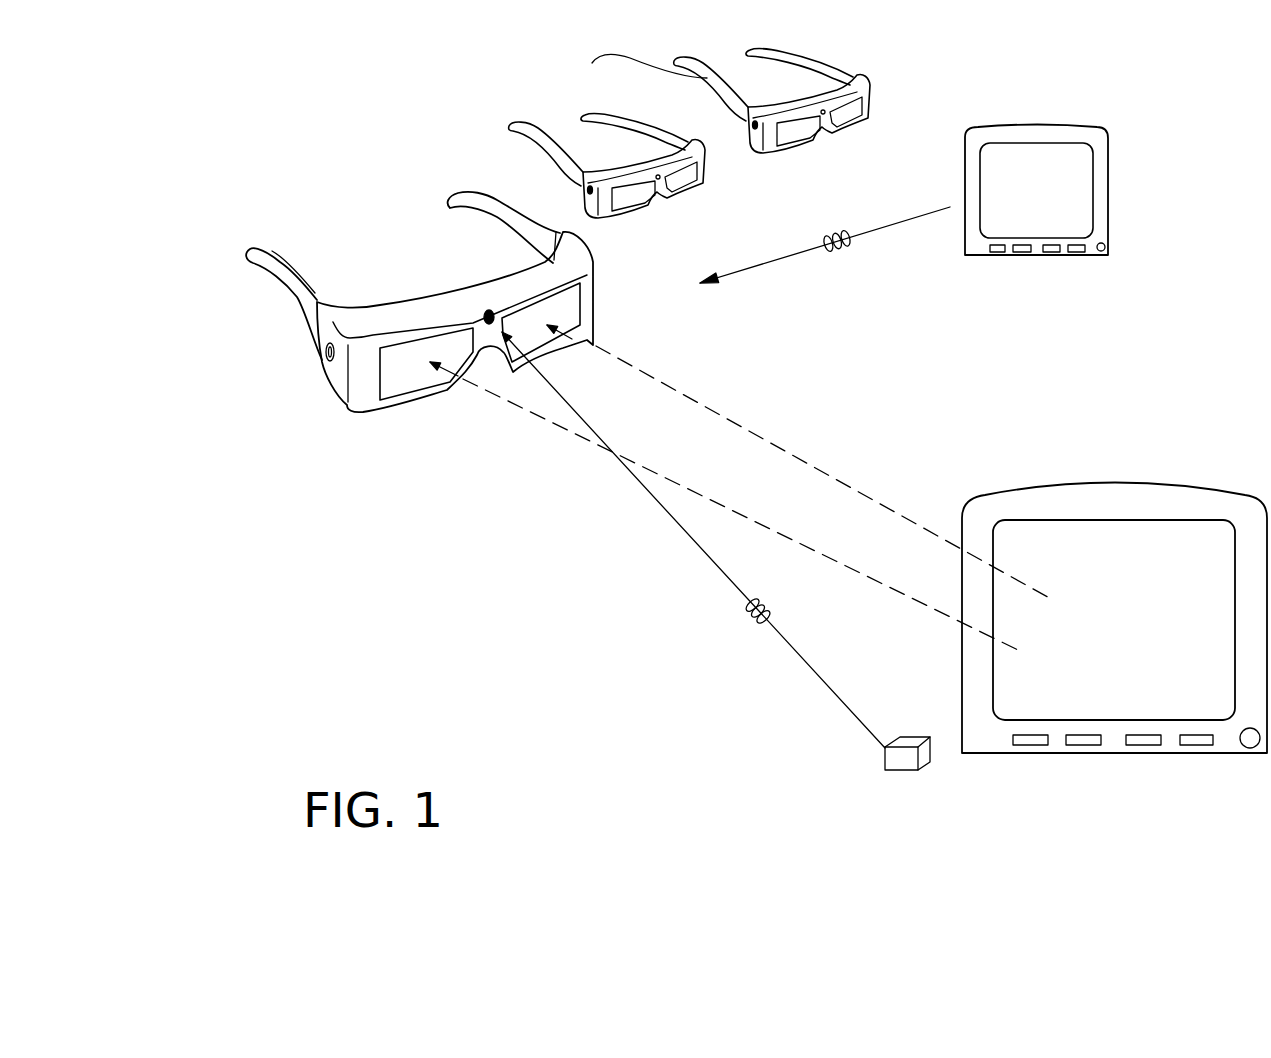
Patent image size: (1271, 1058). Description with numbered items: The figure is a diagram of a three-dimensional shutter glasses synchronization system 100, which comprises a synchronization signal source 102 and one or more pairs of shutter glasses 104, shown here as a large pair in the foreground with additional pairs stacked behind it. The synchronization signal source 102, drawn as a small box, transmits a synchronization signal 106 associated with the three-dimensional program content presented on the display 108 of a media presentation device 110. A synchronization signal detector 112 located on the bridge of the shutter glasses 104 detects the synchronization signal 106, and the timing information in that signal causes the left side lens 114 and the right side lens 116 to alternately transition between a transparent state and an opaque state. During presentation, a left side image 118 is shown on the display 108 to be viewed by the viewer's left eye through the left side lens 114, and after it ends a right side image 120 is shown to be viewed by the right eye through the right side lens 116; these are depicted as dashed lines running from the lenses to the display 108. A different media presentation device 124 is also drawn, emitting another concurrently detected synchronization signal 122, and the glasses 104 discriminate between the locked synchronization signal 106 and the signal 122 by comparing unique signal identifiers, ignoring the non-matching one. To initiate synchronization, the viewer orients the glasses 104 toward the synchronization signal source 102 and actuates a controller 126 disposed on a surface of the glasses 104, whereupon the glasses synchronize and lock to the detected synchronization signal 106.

The 3-D shutter glasses synchronization system 100 is at (449, 634).
The synchronization signal source 102 is at (885, 770).
The shutter glasses 104 is at (580, 115).
The synchronization signal 106 is at (745, 617).
The display 108 is at (1185, 708).
The media presentation device 110 is at (1115, 482).
The synchronization signal detector 112 is at (484, 310).
The left side lens 114 is at (563, 313).
The right side lens 116 is at (393, 374).
The left side image 118 is at (913, 598).
The right side image 120 is at (890, 508).
The synchronization signal 122 is at (838, 250).
The media presentation device 124 is at (1108, 200).
The controller 126 is at (326, 351).